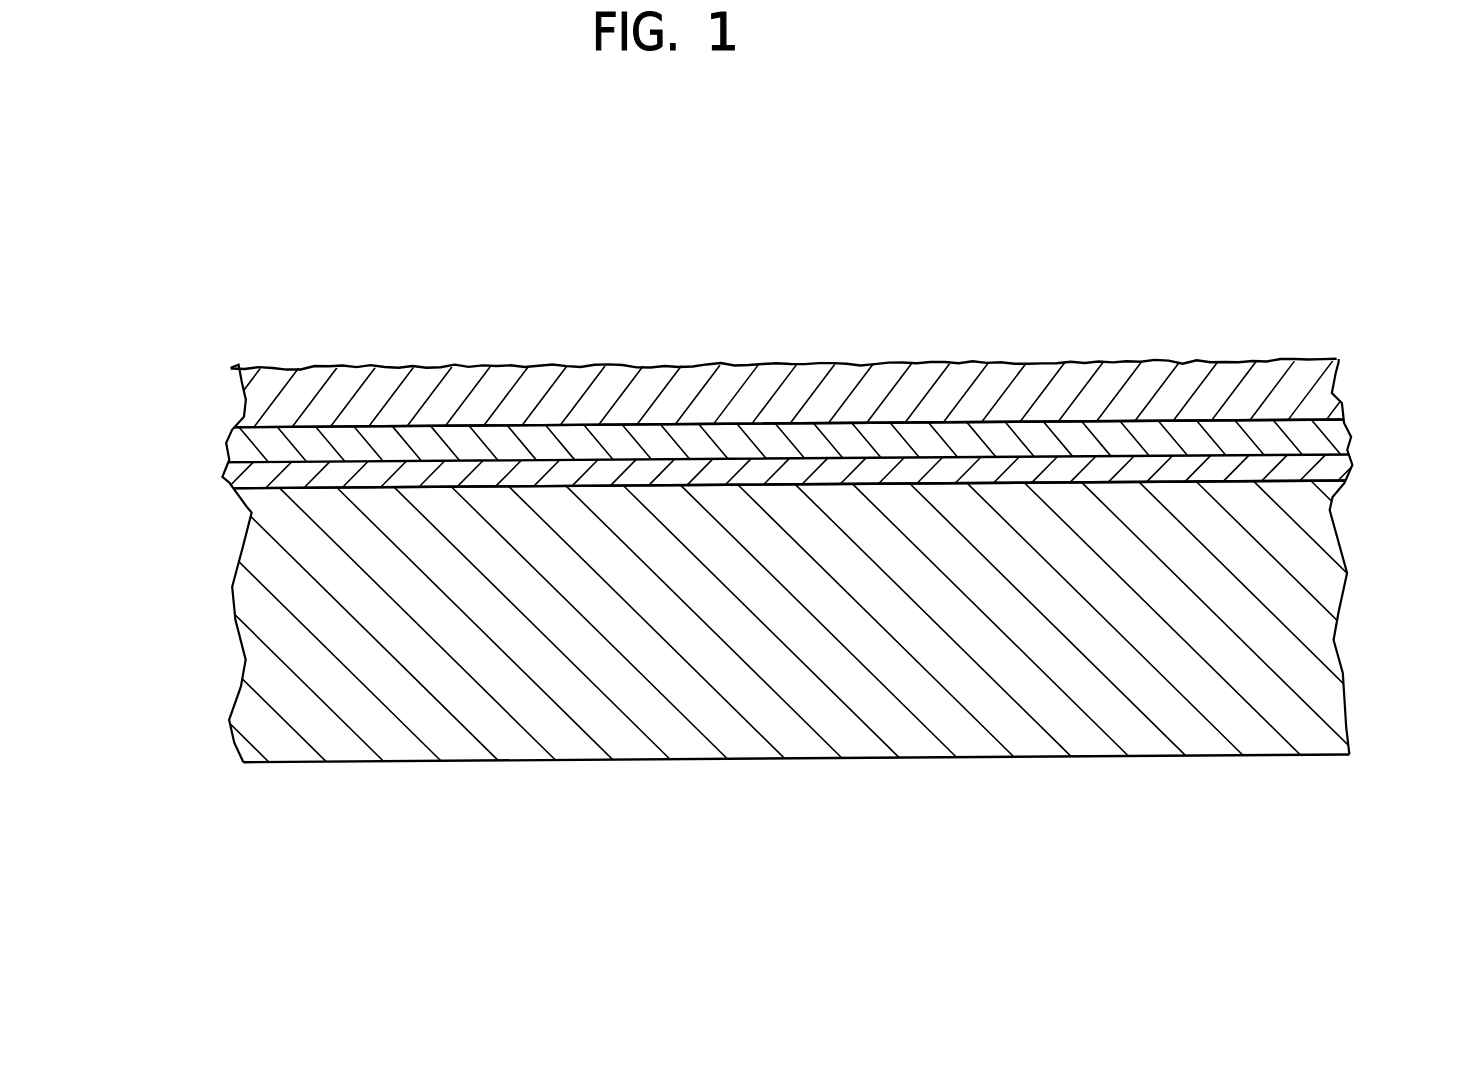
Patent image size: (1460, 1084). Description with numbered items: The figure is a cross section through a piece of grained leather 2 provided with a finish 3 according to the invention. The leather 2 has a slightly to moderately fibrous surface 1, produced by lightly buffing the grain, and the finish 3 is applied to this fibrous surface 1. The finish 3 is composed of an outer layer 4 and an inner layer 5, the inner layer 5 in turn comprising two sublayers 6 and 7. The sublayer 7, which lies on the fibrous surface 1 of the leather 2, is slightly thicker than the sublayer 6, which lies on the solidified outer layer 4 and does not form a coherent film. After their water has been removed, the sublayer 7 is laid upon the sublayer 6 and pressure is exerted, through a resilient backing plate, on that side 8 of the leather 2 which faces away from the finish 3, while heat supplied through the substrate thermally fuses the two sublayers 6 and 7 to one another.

The fibrous surface 1 is at (703, 473).
The leather 2 is at (1242, 570).
The finish 3 is at (183, 371).
The outer layer 4 is at (1060, 400).
The inner layer 5 is at (1381, 420).
The sublayer 6 is at (383, 447).
The sublayer 7 is at (532, 472).
The side of the leather facing away from the finish 8 is at (755, 758).